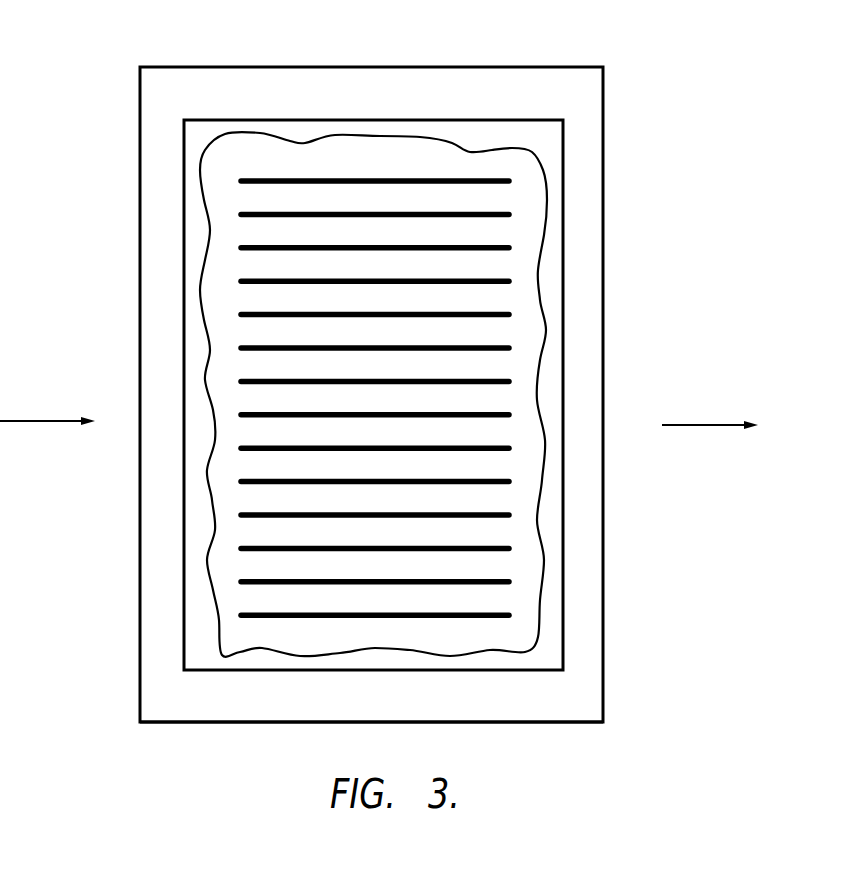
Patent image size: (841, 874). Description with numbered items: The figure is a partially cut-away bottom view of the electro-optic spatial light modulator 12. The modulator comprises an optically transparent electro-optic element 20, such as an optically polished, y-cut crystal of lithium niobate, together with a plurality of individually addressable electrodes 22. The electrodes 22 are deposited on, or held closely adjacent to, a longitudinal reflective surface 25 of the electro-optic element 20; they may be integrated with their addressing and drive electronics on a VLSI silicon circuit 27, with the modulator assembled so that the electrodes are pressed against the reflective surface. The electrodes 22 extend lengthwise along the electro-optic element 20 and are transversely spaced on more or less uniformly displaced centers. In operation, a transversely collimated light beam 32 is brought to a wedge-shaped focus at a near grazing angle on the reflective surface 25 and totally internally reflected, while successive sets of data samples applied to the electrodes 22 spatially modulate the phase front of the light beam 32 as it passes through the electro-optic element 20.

The electro-optic spatial light modulator 12 is at (130, 86).
The electro-optic element 20 is at (140, 605).
The individually addressable electrodes 22 is at (244, 213).
The longitudinal reflective surface 25 is at (271, 705).
The VLSI silicon circuit 27 is at (193, 232).
The light beam 32 is at (31, 421).